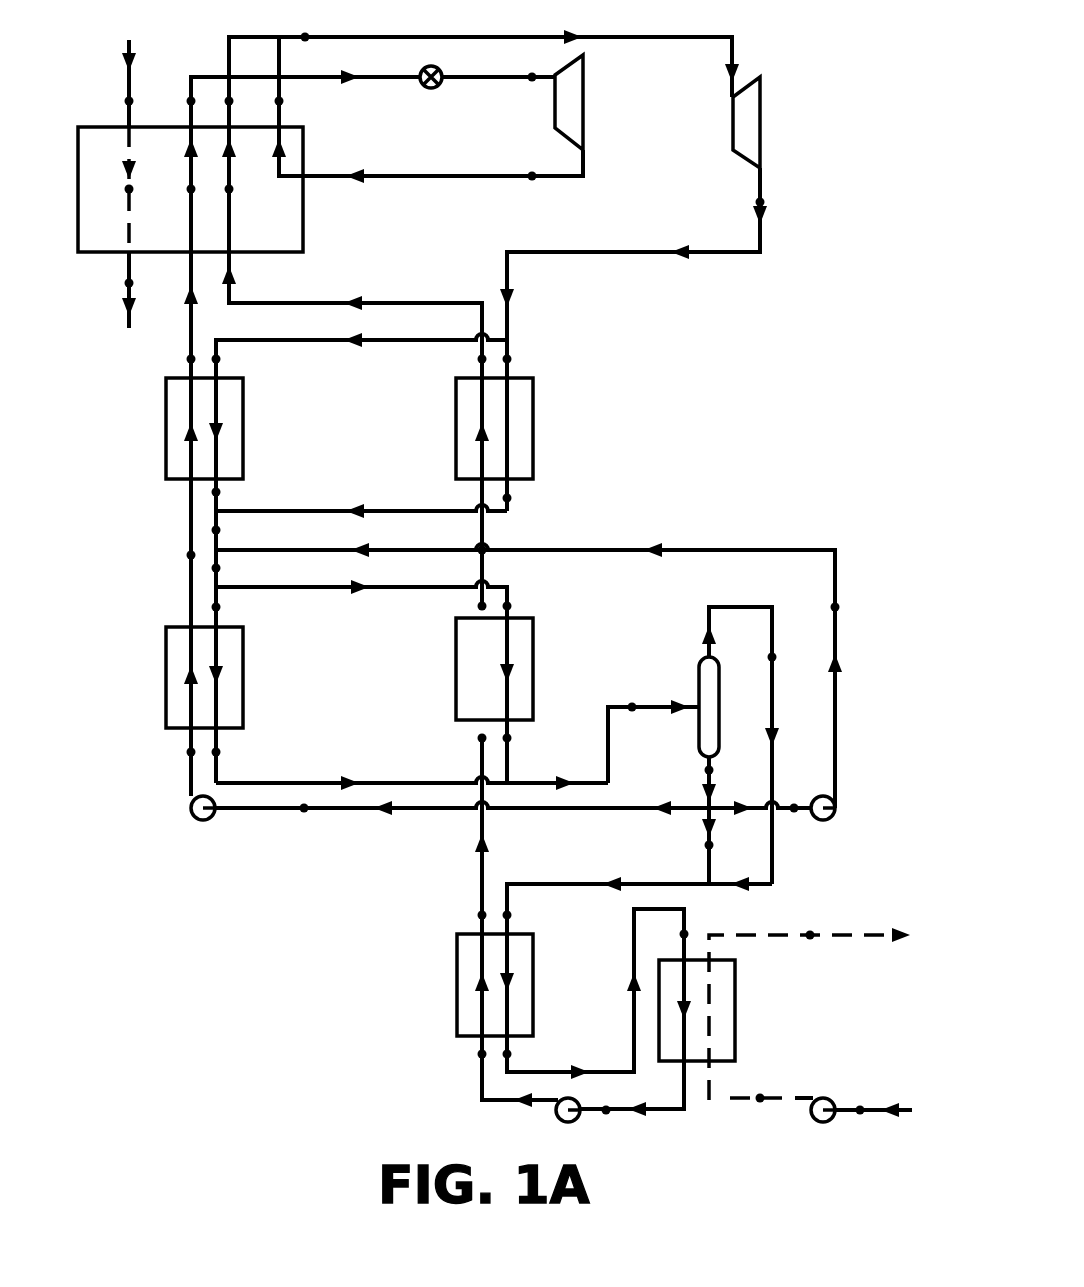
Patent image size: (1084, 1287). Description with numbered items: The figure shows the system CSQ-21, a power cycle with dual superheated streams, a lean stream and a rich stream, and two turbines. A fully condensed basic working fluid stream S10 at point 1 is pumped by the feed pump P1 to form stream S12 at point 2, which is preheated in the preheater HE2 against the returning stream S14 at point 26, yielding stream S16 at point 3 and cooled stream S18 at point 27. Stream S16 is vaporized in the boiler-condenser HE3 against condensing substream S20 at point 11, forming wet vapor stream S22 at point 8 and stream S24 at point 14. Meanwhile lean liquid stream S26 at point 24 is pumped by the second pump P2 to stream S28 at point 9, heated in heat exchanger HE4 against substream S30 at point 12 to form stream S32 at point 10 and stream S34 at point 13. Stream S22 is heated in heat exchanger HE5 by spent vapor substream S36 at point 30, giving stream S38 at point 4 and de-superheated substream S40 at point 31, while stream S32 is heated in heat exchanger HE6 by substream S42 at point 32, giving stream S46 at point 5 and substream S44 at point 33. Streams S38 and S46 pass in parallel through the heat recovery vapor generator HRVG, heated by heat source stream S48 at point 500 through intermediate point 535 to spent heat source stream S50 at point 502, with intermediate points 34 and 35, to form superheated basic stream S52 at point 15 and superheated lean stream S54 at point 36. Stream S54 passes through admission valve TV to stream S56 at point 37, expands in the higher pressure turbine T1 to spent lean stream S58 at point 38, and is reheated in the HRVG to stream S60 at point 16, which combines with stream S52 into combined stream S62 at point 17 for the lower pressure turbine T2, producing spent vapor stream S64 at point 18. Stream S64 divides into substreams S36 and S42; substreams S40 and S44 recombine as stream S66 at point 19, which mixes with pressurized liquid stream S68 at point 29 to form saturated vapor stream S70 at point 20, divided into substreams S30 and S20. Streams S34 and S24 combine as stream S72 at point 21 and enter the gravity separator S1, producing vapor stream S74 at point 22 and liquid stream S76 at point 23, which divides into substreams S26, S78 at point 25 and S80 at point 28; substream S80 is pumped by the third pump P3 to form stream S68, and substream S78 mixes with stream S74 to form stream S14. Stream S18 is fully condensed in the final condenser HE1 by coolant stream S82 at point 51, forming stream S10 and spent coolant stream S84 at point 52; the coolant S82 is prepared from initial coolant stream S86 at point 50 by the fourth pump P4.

The system and method CSQ-21 is at (758, 392).
The heat recovery vapor generator HRVG is at (228, 189).
The first heat exchanger or final condenser HE1 is at (726, 1010).
The second heat exchanger or preheater HE2 is at (524, 985).
The third heat exchanger or boiler-condenser HE3 is at (456, 669).
The fourth heat exchanger HE4 is at (231, 677).
The fifth heat exchanger HE5 is at (456, 428).
The sixth heat exchanger HE6 is at (230, 428).
The higher pressure turbine T1 is at (586, 102).
The lower pressure turbine T2 is at (766, 122).
The admission valve TV is at (431, 89).
The flash tank or gravity separator S1 is at (728, 707).
The first or feed pump P1 is at (561, 1126).
The second pump P2 is at (182, 809).
The third pump P3 is at (835, 808).
The fourth pump P4 is at (826, 1126).
The fully condensed basic working fluid stream S10 is at (670, 1113).
The intermediate pressure basic working fluid stream S12 is at (480, 1072).
The returning basic working fluid stream S14 is at (570, 880).
The heated basic working fluid stream S16 is at (480, 897).
The cooled returning basic working fluid stream S18 is at (607, 1067).
The second condensing lean combined working fluid substream S20 is at (457, 587).
The heated, vaporized basic working fluid stream S22 is at (483, 532).
The cooled second condensing combined working fluid substream S24 is at (510, 757).
The lean saturated liquid stream S26 is at (268, 812).
The high pressure lean liquid stream S28 is at (190, 768).
The first condensing lean combined working fluid substream S30 is at (233, 622).
The preheated high pressure lean liquid stream S32 is at (180, 600).
The cooled first condensing combined working fluid substream S34 is at (280, 780).
The first spent vapor substream S36 is at (510, 370).
The vaporized basic working fluid stream S38 is at (432, 303).
The first de-superheated vapor substream S40 is at (432, 510).
The second spent vapor substream S42 is at (305, 340).
The second de-superheated vapor substream S44 is at (190, 508).
The heated high pressure lean liquid stream S46 is at (190, 335).
The heat source stream S48 is at (124, 58).
The spent heat source stream S50 is at (122, 295).
The fully vaporized, superheated basic working fluid stream S52 is at (228, 63).
The fully vaporized, superheated high pressure lean stream S54 is at (190, 88).
The reduced pressure fully vaporized, superheated high pressure lean stream S56 is at (456, 80).
The spent lean stream S58 is at (403, 172).
The reheated lean stream S60 is at (283, 117).
The combined working fluid stream S62 is at (456, 40).
The spent vapor stream S64 is at (633, 250).
The combined de-superheated stream S66 is at (190, 518).
The pressurized liquid stream S68 is at (457, 548).
The saturated vapor stream S70 is at (215, 582).
The partially condensed working fluid stream S72 is at (657, 703).
The saturated vapor stream S74 is at (733, 605).
The saturated liquid stream S76 is at (703, 788).
The liquid substream S78 is at (690, 865).
The liquid substream S80 is at (720, 812).
The coolant stream S82 is at (772, 1093).
The spent coolant stream S84 is at (873, 932).
The initial coolant stream S86 is at (847, 1113).
The point 1 is at (606, 1122).
The point 2 is at (469, 1054).
The point 3 is at (469, 826).
The point 4 is at (470, 359).
The point 5 is at (179, 359).
The point 8 is at (472, 606).
The point 9 is at (178, 752).
The point 10 is at (176, 555).
The point 11 is at (522, 606).
The point 12 is at (232, 607).
The point 13 is at (232, 752).
The point 14 is at (523, 738).
The point 15 is at (217, 101).
The point 16 is at (294, 101).
The point 17 is at (305, 50).
The point 18 is at (745, 202).
The point 19 is at (232, 530).
The point 20 is at (232, 568).
The point 21 is at (632, 719).
The point 22 is at (788, 657).
The point 23 is at (695, 770).
The point 24 is at (304, 821).
The point 25 is at (695, 845).
The point 26 is at (523, 915).
The point 27 is at (596, 994).
The point 28 is at (794, 820).
The point 29 is at (851, 607).
The point 30 is at (523, 359).
The point 31 is at (522, 498).
The point 32 is at (232, 359).
The point 33 is at (232, 492).
The point 34 is at (217, 189).
The point 35 is at (178, 189).
The point 36 is at (177, 101).
The point 37 is at (525, 88).
The point 38 is at (525, 167).
The point 50 is at (862, 1099).
The point 51 is at (758, 1088).
The point 52 is at (810, 923).
The point 500 is at (110, 101).
The point 502 is at (110, 283).
The point 535 is at (110, 189).